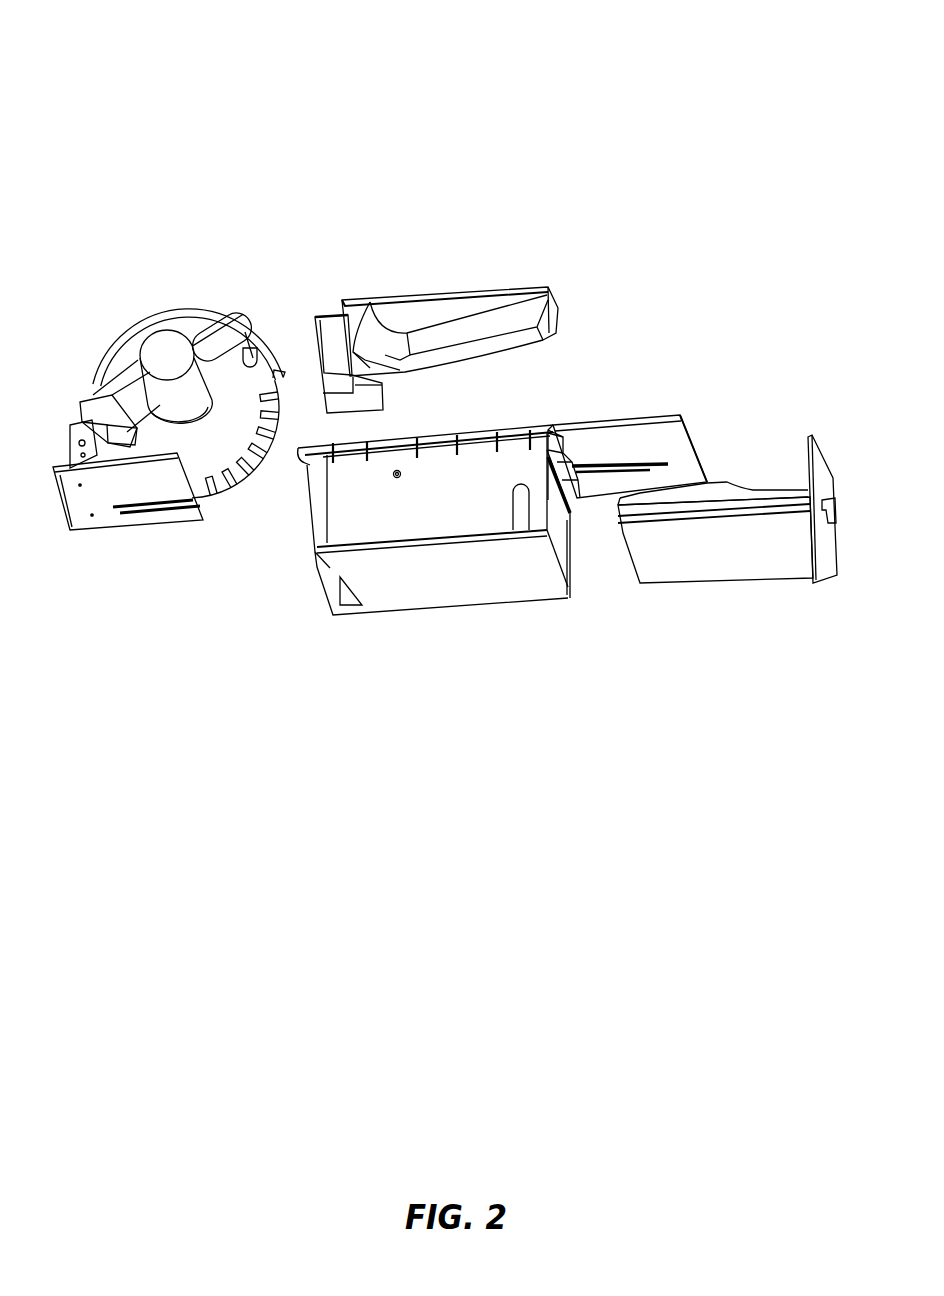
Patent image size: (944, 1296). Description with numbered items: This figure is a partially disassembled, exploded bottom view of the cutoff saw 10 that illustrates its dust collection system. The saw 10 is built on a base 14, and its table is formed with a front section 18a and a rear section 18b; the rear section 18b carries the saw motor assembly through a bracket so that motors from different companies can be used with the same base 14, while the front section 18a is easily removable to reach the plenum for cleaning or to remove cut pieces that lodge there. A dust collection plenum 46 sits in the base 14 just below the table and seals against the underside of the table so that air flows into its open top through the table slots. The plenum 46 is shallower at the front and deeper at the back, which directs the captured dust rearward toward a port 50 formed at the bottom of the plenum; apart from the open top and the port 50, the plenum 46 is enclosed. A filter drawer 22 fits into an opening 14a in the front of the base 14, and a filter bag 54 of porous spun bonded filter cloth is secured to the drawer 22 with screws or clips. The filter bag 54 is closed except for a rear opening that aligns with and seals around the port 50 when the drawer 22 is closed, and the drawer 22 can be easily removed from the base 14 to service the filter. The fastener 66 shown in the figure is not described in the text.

The saw 10 is at (652, 182).
The base 14 is at (470, 512).
The opening 14a is at (558, 533).
The front section 18a is at (620, 441).
The rear section 18b is at (143, 482).
The filter drawer 22 is at (740, 540).
The dust collection plenum 46 is at (418, 312).
The port 50 is at (362, 395).
The filter bag 54 is at (718, 485).
The fastener 66 is at (396, 478).